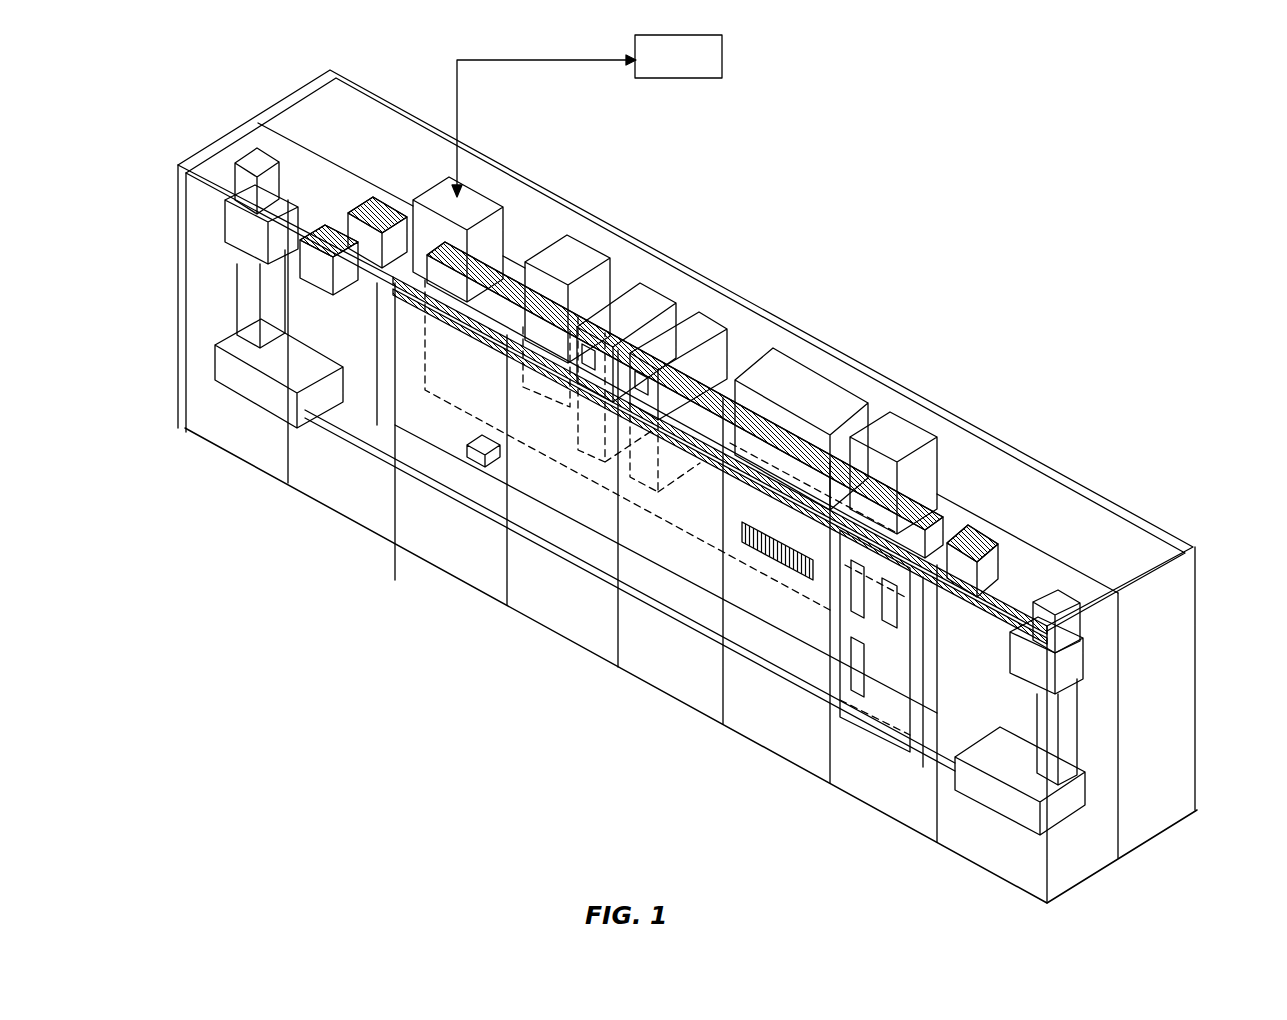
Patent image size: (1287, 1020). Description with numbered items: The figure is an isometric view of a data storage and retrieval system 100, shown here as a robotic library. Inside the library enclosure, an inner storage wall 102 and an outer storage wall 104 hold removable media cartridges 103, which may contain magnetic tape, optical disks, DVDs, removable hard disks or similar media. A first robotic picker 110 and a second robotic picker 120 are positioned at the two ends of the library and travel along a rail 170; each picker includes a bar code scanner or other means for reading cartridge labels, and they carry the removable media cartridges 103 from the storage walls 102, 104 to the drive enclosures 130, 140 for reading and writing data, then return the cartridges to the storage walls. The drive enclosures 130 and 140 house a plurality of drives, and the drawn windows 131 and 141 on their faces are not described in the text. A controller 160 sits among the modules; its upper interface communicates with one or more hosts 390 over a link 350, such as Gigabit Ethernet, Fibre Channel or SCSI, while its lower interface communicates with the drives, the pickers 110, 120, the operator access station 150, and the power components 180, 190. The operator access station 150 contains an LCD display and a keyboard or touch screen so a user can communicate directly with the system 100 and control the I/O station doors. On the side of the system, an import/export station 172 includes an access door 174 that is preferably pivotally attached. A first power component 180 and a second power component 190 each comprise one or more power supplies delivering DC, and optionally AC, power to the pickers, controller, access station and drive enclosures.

The data storage and retrieval system 100 is at (932, 96).
The inner storage wall 102 is at (483, 290).
The removable media cartridges 103 is at (467, 453).
The outer storage wall 104 is at (447, 438).
The robotic picker 110 is at (235, 228).
The robotic picker 120 is at (1070, 665).
The drive enclosure 130 is at (669, 302).
The module window 131 is at (590, 348).
The drive enclosure 140 is at (746, 339).
The module window 141 is at (652, 388).
The operator access station 150 is at (567, 277).
The controller 160 is at (475, 205).
The rail 170 is at (568, 553).
The import/export station 172 is at (820, 690).
The access door 174 is at (860, 670).
The first power component 180 is at (972, 533).
The second power component 190 is at (1062, 603).
The link 350 is at (490, 60).
The host 390 is at (690, 35).